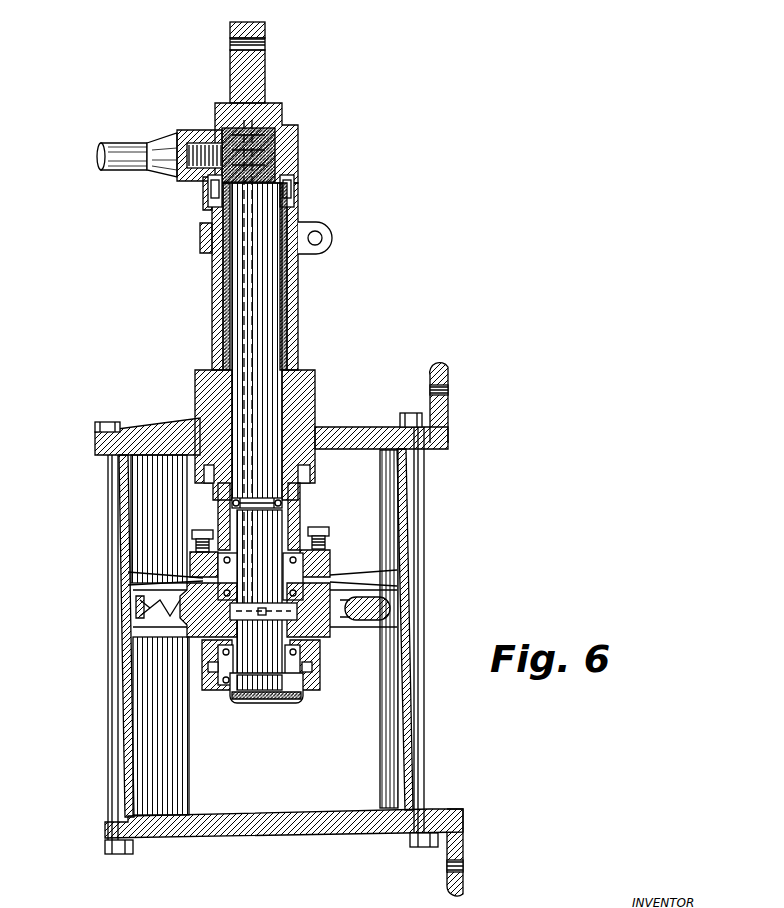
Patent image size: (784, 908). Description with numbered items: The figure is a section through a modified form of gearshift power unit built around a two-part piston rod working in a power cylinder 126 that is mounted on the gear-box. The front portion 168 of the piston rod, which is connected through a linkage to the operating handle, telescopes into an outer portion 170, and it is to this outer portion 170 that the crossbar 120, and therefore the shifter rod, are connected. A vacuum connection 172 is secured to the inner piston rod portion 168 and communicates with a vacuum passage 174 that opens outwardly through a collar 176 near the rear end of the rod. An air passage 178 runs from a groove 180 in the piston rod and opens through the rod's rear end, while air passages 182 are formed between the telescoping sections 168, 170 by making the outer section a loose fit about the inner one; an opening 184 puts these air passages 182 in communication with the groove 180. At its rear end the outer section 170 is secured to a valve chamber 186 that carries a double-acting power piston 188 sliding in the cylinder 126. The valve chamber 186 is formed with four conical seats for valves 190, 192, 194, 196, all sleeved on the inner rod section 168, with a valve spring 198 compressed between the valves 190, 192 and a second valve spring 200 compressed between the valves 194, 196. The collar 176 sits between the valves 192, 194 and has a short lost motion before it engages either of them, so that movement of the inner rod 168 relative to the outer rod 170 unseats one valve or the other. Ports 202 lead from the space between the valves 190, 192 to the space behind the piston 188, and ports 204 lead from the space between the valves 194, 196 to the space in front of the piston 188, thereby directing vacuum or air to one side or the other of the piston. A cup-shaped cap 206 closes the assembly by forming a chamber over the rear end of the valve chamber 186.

The crossbar 120 is at (321, 236).
The power cylinder 126 is at (140, 542).
The front portion of two-part piston rod 168 is at (253, 110).
The outer portion of piston rod 170 is at (297, 337).
The vacuum connection 172 is at (130, 153).
The vacuum passage 174 is at (248, 352).
The collar 176 is at (325, 640).
The air passage 178 is at (316, 512).
The groove 180 is at (243, 503).
The air passages 182 is at (223, 317).
The opening 184 is at (303, 503).
The valve chamber 186 is at (322, 668).
The double-acting power piston 188 is at (155, 620).
The valve 190 is at (300, 690).
The valve 192 is at (204, 650).
The valve 194 is at (325, 565).
The valve 196 is at (228, 548).
The valve spring 198 is at (283, 672).
The valve spring 200 is at (322, 546).
The ports 202 is at (222, 690).
The ports 204 is at (200, 577).
The cup-shaped cap 206 is at (250, 705).